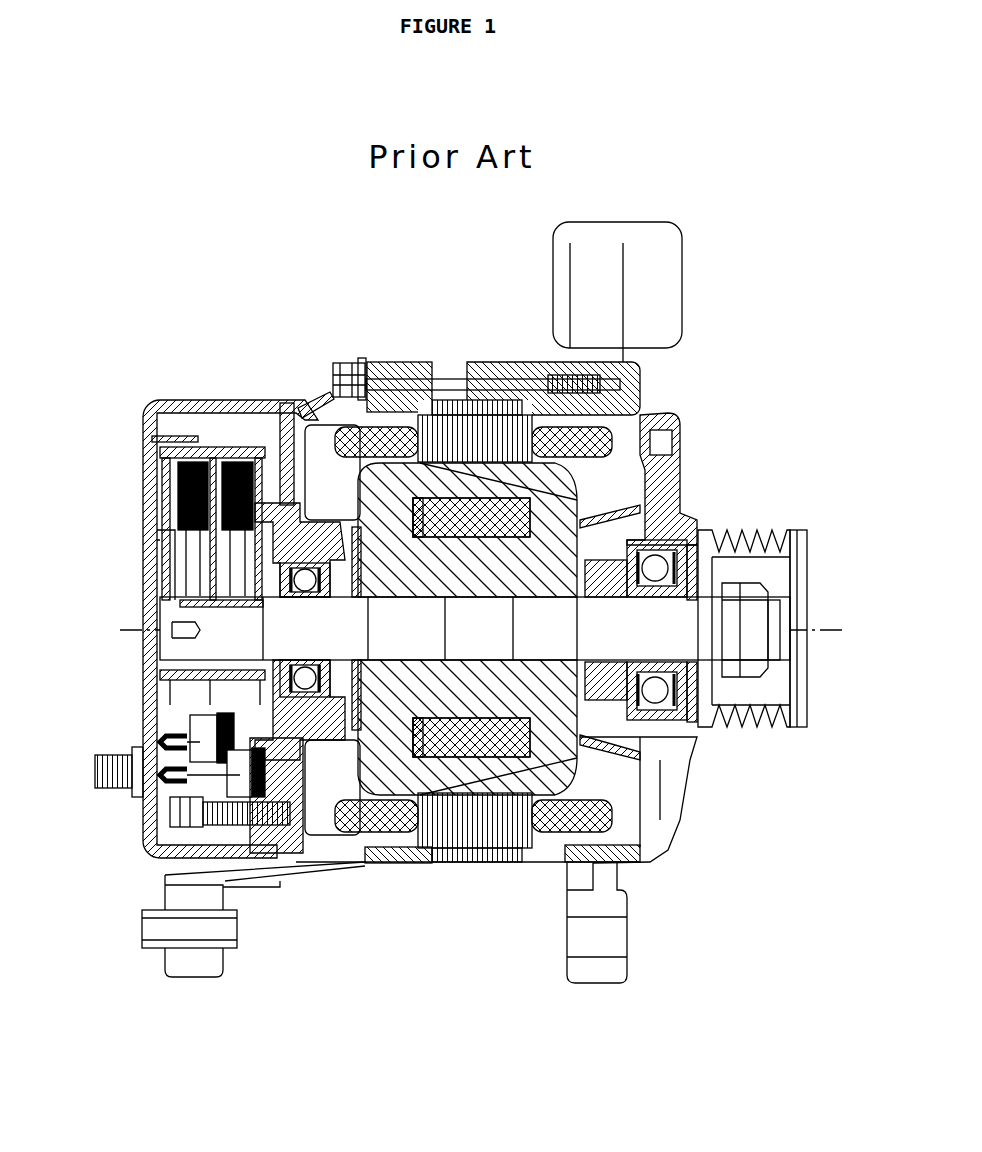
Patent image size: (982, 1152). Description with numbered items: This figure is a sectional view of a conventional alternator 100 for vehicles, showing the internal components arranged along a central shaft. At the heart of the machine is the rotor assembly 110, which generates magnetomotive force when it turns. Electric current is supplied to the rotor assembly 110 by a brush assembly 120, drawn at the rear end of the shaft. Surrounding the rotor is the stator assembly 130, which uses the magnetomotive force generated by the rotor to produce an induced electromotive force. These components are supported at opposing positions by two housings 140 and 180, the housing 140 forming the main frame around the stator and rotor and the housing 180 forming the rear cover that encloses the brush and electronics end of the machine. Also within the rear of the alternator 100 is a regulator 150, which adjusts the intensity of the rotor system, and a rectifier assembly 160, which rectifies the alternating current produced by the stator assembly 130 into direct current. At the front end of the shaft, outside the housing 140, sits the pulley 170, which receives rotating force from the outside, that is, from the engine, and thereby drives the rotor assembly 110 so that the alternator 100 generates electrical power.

The alternator 100 is at (776, 262).
The rotor assembly 110 is at (608, 427).
The brush assembly 120 is at (213, 445).
The stator assembly 130 is at (397, 421).
The housing 140 is at (290, 440).
The regulator 150 is at (165, 568).
The rectifier assembly 160 is at (188, 702).
The pulley 170 is at (762, 538).
The housing 180 is at (148, 400).